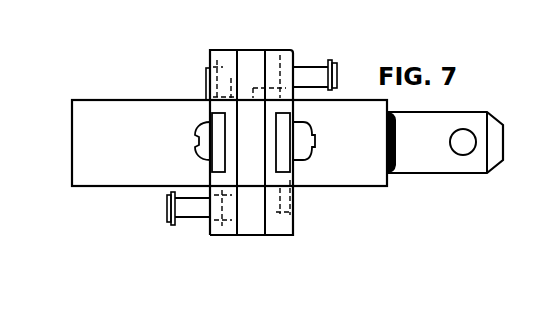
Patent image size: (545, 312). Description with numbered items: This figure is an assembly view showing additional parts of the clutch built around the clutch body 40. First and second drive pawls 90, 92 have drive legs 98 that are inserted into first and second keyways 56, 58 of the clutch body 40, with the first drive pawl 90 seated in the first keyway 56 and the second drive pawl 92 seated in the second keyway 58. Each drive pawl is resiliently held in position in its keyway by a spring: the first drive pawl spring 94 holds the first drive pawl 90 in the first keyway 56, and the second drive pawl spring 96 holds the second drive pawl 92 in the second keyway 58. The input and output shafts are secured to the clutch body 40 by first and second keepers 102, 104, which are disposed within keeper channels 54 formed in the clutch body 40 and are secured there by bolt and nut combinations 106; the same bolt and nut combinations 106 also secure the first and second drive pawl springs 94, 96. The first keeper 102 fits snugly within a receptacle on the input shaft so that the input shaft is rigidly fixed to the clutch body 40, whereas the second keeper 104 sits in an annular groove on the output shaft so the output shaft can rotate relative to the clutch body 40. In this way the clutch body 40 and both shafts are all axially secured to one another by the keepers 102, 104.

The clutch body 40 is at (180, 65).
The keeper channels 54 is at (280, 130).
The first keyway 56 is at (281, 62).
The second keyway 58 is at (223, 238).
The first drive pawl 90 is at (307, 74).
The second drive pawl 92 is at (193, 215).
The first drive pawl spring 94 is at (219, 50).
The second drive pawl spring 96 is at (293, 220).
The drive legs 98 is at (243, 97).
The first keeper 102 is at (216, 167).
The second keeper 104 is at (288, 120).
The bolt and nut combination 106 is at (207, 130).